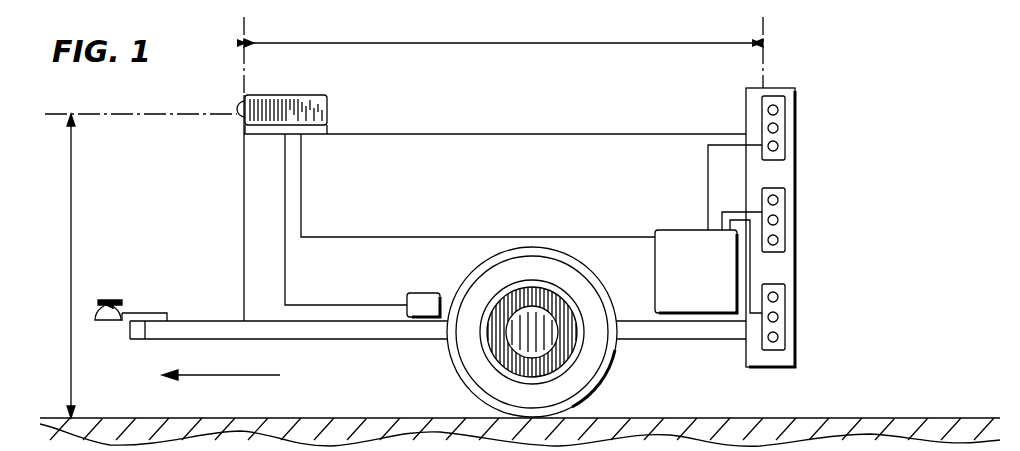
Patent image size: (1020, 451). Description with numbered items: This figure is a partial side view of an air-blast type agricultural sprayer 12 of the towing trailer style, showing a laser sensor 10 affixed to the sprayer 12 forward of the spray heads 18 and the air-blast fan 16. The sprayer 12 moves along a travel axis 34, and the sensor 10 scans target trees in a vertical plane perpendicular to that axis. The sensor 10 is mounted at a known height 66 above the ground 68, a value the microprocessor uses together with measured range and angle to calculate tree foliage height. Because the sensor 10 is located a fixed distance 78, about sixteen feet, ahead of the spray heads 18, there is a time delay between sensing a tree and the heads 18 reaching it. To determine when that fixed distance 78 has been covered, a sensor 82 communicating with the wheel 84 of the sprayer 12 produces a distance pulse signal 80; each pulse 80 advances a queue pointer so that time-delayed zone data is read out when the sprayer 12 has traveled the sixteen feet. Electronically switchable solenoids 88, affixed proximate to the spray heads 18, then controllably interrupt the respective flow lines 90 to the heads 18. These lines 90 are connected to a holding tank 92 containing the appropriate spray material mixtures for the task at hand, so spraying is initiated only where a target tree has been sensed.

The sensor 10 is at (335, 105).
The agricultural sprayer 12 is at (667, 126).
The air-blast fan 16 is at (776, 265).
The spray heads 18 is at (778, 184).
The travel axis 34 is at (222, 376).
The height 66 is at (72, 210).
The ground 68 is at (690, 418).
The fixed distance 78 is at (679, 43).
The distance pulse signal 80 is at (285, 222).
The sensor 82 is at (423, 288).
The wheel 84 is at (606, 364).
The solenoids 88 is at (712, 282).
The flow lines 90 is at (720, 210).
The holding tank 92 is at (544, 134).